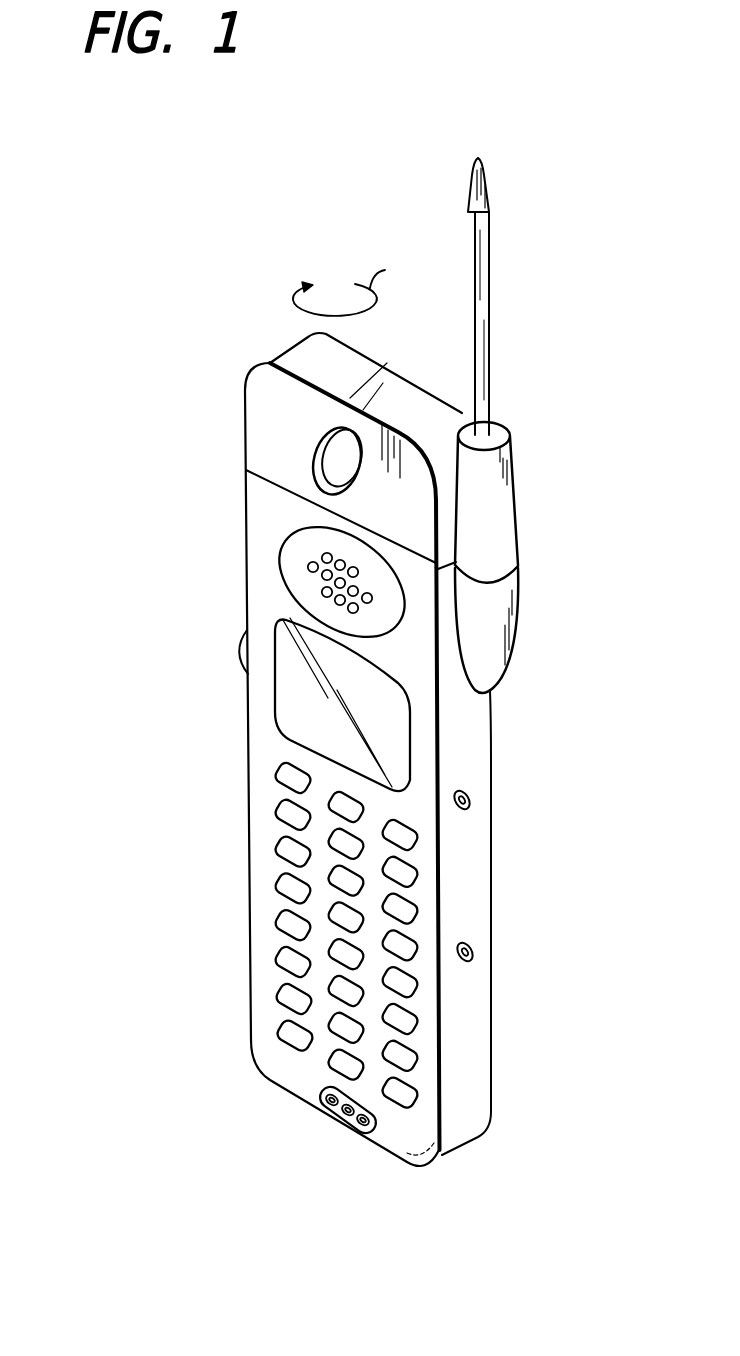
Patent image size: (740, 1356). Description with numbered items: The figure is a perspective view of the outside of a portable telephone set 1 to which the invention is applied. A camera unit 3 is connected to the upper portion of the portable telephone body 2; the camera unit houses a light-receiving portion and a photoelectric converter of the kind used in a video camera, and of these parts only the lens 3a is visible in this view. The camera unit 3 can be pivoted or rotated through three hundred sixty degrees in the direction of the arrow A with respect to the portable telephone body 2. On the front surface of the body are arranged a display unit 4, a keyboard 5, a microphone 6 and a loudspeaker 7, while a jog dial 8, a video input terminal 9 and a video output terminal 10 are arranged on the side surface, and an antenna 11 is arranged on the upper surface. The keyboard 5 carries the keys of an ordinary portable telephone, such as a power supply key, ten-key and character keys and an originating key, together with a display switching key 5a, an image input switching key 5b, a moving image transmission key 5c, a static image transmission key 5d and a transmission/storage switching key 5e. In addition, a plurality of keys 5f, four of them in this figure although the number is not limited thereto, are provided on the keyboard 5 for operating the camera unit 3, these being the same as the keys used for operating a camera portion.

The portable telephone set 1 is at (264, 1291).
The portable telephone body 2 is at (248, 704).
The camera unit 3 is at (279, 353).
The lens 3a is at (345, 449).
The display unit 4 is at (276, 619).
The keyboard 5 is at (235, 728).
The display switching key 5a is at (303, 967).
The image input switching key 5b is at (337, 975).
The moving image transmission key 5c is at (410, 1065).
The static image transmission key 5d is at (412, 1100).
The transmission/storage switching key 5e is at (363, 1000).
The keys 5f is at (330, 1063).
The microphone 6 is at (341, 1113).
The loudspeaker 7 is at (307, 553).
The jog dial 8 is at (239, 649).
The video input terminal 9 is at (467, 940).
The video output terminal 10 is at (466, 790).
The antenna 11 is at (490, 284).